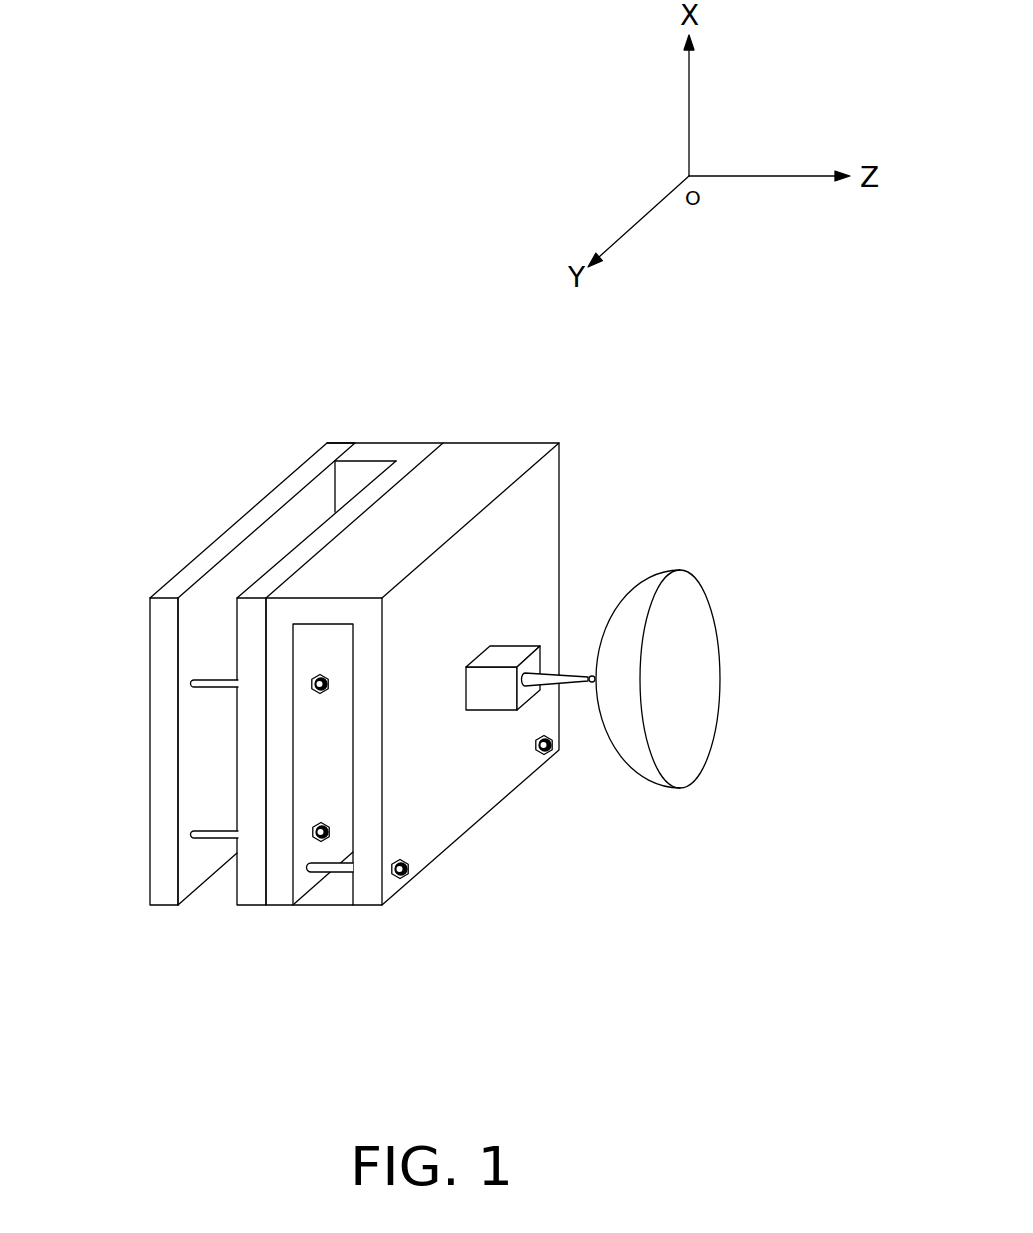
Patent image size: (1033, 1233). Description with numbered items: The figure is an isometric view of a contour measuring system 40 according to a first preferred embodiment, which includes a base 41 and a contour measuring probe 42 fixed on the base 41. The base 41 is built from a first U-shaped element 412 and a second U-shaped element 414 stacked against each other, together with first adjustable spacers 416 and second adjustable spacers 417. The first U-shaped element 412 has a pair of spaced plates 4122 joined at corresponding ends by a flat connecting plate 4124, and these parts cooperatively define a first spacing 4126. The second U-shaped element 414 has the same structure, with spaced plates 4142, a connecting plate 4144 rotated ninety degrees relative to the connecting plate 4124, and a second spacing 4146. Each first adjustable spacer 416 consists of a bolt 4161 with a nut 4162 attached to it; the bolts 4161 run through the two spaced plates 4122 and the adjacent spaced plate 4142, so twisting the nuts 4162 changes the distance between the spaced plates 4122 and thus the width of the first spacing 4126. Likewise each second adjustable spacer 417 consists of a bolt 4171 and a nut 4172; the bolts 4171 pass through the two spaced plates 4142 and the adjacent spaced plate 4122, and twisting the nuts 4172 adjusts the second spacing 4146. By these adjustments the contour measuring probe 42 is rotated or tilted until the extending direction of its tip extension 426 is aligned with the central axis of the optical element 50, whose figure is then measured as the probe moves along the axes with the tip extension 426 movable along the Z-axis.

The contour measuring system 40 is at (228, 305).
The base 41 is at (135, 777).
The first U-shaped element 412 is at (497, 425).
The spaced plates 4122 is at (517, 512).
The connecting plate 4124 is at (517, 455).
The first spacing 4126 is at (330, 913).
The second U-shaped element 414 is at (323, 417).
The spaced plate 4142 is at (262, 512).
The connecting plate 4144 is at (366, 450).
The second spacing 4146 is at (195, 632).
The first adjustable spacer 416 is at (472, 980).
The bolt 4161 is at (353, 874).
The nut 4162 is at (410, 870).
The second adjustable spacer 417 is at (265, 980).
The bolt 4171 is at (207, 834).
The nut 4172 is at (311, 835).
The contour measuring probe 42 is at (506, 653).
The tip extension 426 is at (548, 683).
The optical element 50 is at (683, 755).